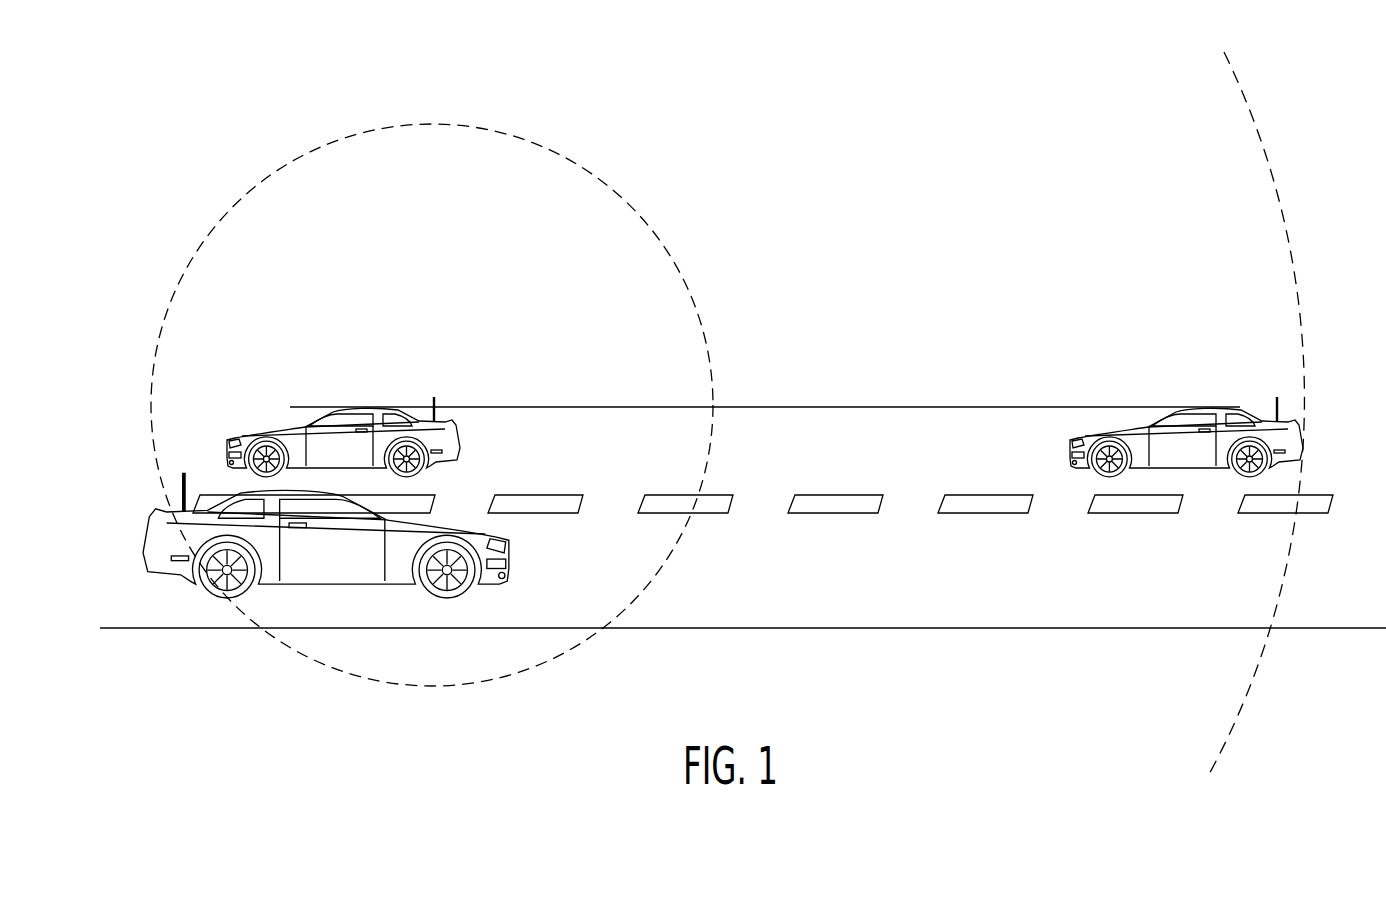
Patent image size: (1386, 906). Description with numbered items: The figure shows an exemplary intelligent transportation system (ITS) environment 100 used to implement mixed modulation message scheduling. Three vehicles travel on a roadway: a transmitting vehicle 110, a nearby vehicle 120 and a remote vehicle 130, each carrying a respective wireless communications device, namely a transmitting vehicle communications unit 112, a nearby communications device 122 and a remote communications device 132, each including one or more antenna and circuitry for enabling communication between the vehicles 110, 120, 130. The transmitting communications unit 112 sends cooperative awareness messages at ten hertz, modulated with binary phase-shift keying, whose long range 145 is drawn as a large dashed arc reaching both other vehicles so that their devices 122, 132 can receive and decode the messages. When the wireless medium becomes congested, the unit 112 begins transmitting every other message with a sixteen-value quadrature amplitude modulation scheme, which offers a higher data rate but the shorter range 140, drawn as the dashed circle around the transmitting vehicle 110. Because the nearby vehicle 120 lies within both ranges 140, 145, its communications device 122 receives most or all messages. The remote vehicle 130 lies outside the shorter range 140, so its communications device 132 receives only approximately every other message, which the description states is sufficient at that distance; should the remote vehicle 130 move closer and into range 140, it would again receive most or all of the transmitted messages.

The intelligent transportation system (ITS) environment 100 is at (250, 113).
The transmitting vehicle 110 is at (390, 414).
The transmitting vehicle communications unit 112 is at (434, 396).
The nearby vehicle 120 is at (373, 493).
The nearby communications device 122 is at (184, 472).
The remote vehicle 130 is at (1151, 415).
The remote communications device 132 is at (1277, 398).
The 16-QAM range 140 is at (214, 222).
The BPSK range 145 is at (1280, 205).